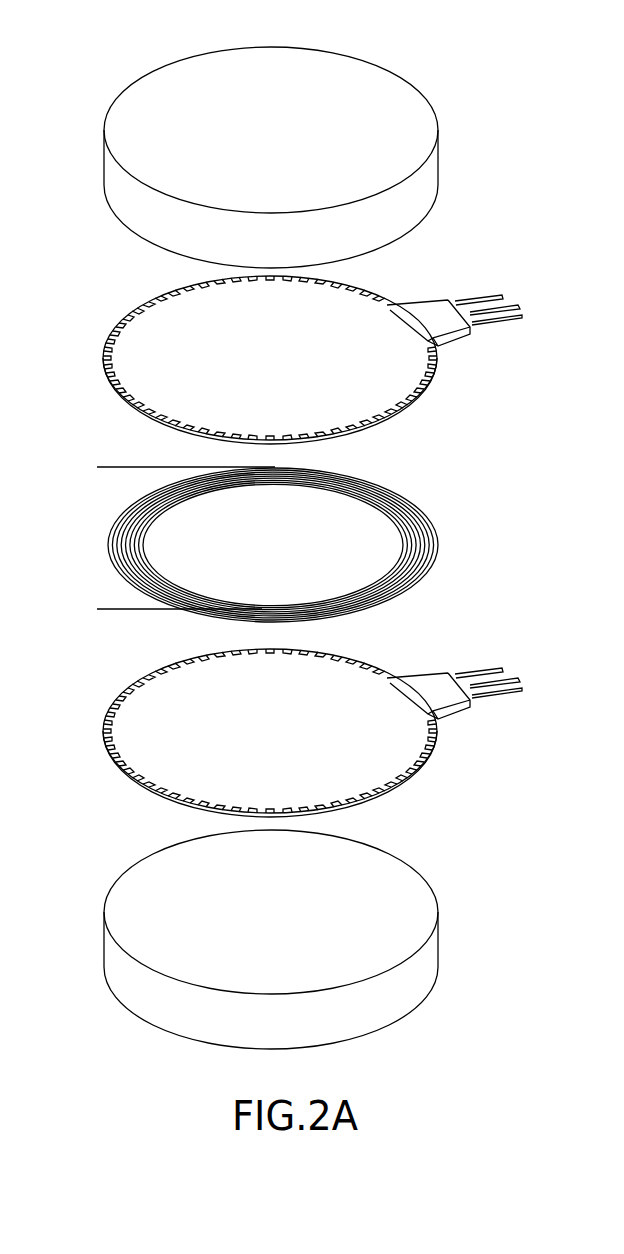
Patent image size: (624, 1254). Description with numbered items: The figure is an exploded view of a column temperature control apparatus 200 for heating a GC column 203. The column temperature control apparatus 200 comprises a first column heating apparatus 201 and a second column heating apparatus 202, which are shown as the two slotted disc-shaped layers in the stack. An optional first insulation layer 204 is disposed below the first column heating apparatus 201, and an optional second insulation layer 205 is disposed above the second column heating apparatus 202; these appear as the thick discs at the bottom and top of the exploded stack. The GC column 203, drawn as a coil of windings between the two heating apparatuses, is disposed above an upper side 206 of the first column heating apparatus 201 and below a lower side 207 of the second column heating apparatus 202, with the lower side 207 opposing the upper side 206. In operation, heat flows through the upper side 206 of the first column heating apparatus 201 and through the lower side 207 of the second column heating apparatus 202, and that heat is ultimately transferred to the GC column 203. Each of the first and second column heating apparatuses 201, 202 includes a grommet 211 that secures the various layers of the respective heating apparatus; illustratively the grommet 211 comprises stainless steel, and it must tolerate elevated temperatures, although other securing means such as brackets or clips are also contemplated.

The column temperature control apparatus 200 is at (116, 47).
The first column heating apparatus 201 is at (270, 733).
The second column heating apparatus 202 is at (299, 364).
The GC column 203 is at (438, 535).
The first insulation layer 204 is at (422, 968).
The second insulation layer 205 is at (430, 170).
The upper side 206 is at (143, 730).
The lower side 207 is at (370, 432).
The grommet 211 is at (396, 302).